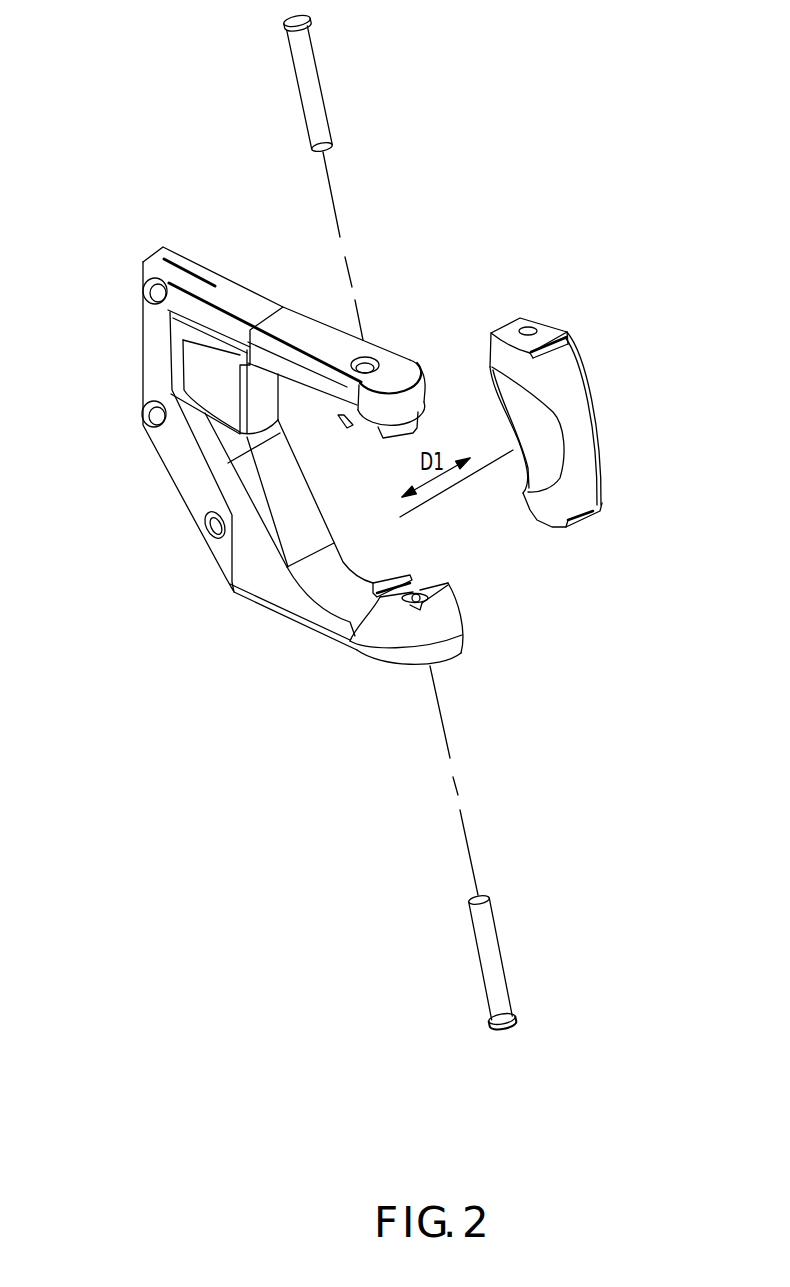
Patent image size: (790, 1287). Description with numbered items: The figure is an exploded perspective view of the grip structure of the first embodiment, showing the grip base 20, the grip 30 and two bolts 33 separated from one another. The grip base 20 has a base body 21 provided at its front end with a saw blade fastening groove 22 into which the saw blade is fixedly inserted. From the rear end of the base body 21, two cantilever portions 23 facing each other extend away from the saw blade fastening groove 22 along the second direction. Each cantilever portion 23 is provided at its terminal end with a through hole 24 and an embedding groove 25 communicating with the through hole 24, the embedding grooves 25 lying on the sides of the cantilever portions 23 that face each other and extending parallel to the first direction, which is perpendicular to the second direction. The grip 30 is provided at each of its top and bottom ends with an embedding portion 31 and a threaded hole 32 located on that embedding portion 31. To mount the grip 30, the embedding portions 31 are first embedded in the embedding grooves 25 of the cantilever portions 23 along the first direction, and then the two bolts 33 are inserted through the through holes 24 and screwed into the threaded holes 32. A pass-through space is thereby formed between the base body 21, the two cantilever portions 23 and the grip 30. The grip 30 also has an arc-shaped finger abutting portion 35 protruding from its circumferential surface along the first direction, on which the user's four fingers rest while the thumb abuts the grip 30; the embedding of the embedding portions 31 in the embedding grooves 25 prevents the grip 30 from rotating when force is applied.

The grip base 20 is at (265, 482).
The base body 21 is at (187, 472).
The saw blade fastening groove 22 is at (185, 267).
The cantilever portions 23 is at (307, 325).
The through hole 24 is at (366, 360).
The embedding groove 25 is at (351, 433).
The grip 30 is at (575, 420).
The embedding portion 31 is at (553, 325).
The threaded hole 32 is at (530, 328).
The bolts 33 is at (305, 80).
The finger abutting portion 35 is at (552, 437).